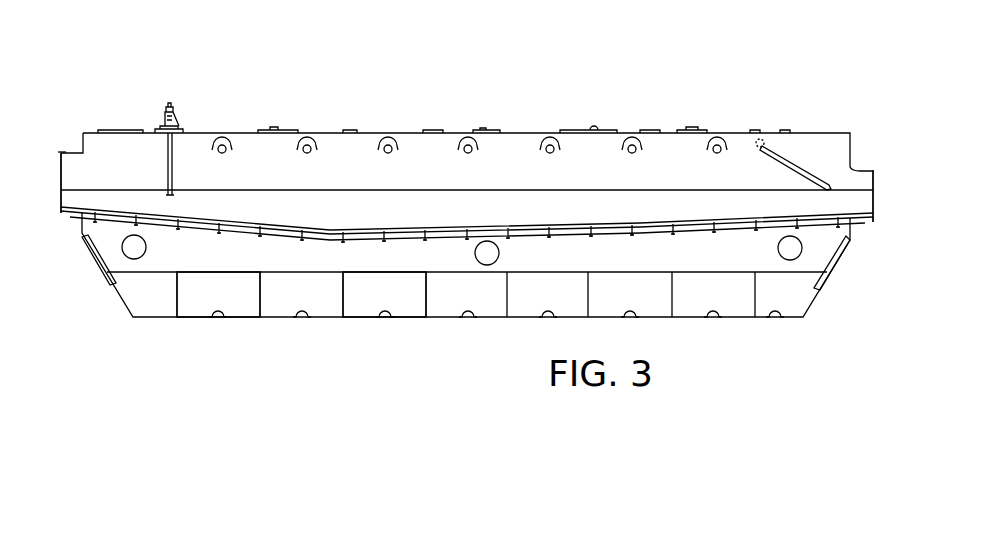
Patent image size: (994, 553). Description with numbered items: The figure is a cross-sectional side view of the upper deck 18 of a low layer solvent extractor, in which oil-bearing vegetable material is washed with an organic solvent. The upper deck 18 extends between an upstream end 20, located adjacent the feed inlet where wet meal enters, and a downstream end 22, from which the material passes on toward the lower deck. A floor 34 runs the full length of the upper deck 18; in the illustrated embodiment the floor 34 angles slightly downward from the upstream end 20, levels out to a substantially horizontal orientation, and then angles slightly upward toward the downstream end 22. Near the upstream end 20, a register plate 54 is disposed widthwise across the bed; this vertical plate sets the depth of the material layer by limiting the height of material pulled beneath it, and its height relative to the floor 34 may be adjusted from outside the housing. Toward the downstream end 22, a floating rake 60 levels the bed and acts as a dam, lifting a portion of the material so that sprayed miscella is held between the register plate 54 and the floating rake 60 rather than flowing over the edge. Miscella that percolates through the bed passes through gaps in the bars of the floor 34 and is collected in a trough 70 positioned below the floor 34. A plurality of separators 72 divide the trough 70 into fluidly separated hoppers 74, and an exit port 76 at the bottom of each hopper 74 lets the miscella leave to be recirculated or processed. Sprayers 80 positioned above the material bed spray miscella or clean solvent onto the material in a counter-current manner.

The upper deck 18 is at (261, 74).
The upstream end 20 is at (61, 165).
The downstream end 22 is at (873, 180).
The floor 34 is at (330, 228).
The register plate 54 is at (167, 169).
The floating rake 60 is at (797, 160).
The trough 70 is at (790, 295).
The separator 72 is at (590, 290).
The hopper 74 is at (230, 301).
The exit port 76 is at (385, 323).
The sprayer 80 is at (390, 130).